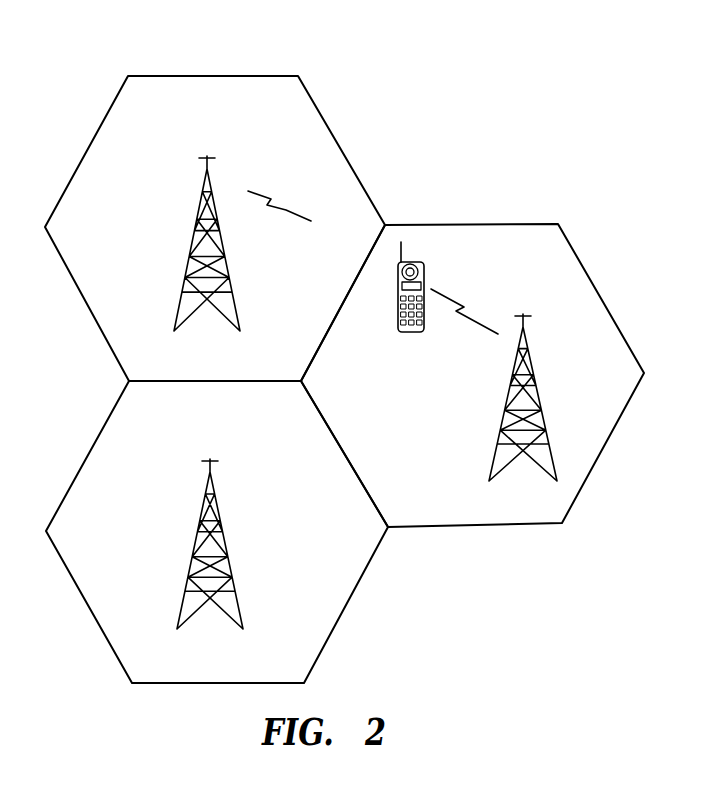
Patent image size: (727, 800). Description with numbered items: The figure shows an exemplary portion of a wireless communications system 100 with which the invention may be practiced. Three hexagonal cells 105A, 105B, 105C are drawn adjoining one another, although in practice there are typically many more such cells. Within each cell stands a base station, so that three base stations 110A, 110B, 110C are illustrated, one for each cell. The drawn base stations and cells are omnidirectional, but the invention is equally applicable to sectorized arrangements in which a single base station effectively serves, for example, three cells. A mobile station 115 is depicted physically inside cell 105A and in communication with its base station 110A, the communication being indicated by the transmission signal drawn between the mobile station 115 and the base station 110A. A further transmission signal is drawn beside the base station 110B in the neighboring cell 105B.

The wireless communications system 100 is at (568, 123).
The cell 105A is at (498, 225).
The cell 105B is at (238, 77).
The cell 105C is at (320, 653).
The base station 110A is at (540, 402).
The base station 110B is at (222, 245).
The base station 110C is at (227, 553).
The mobile station 115 is at (423, 267).